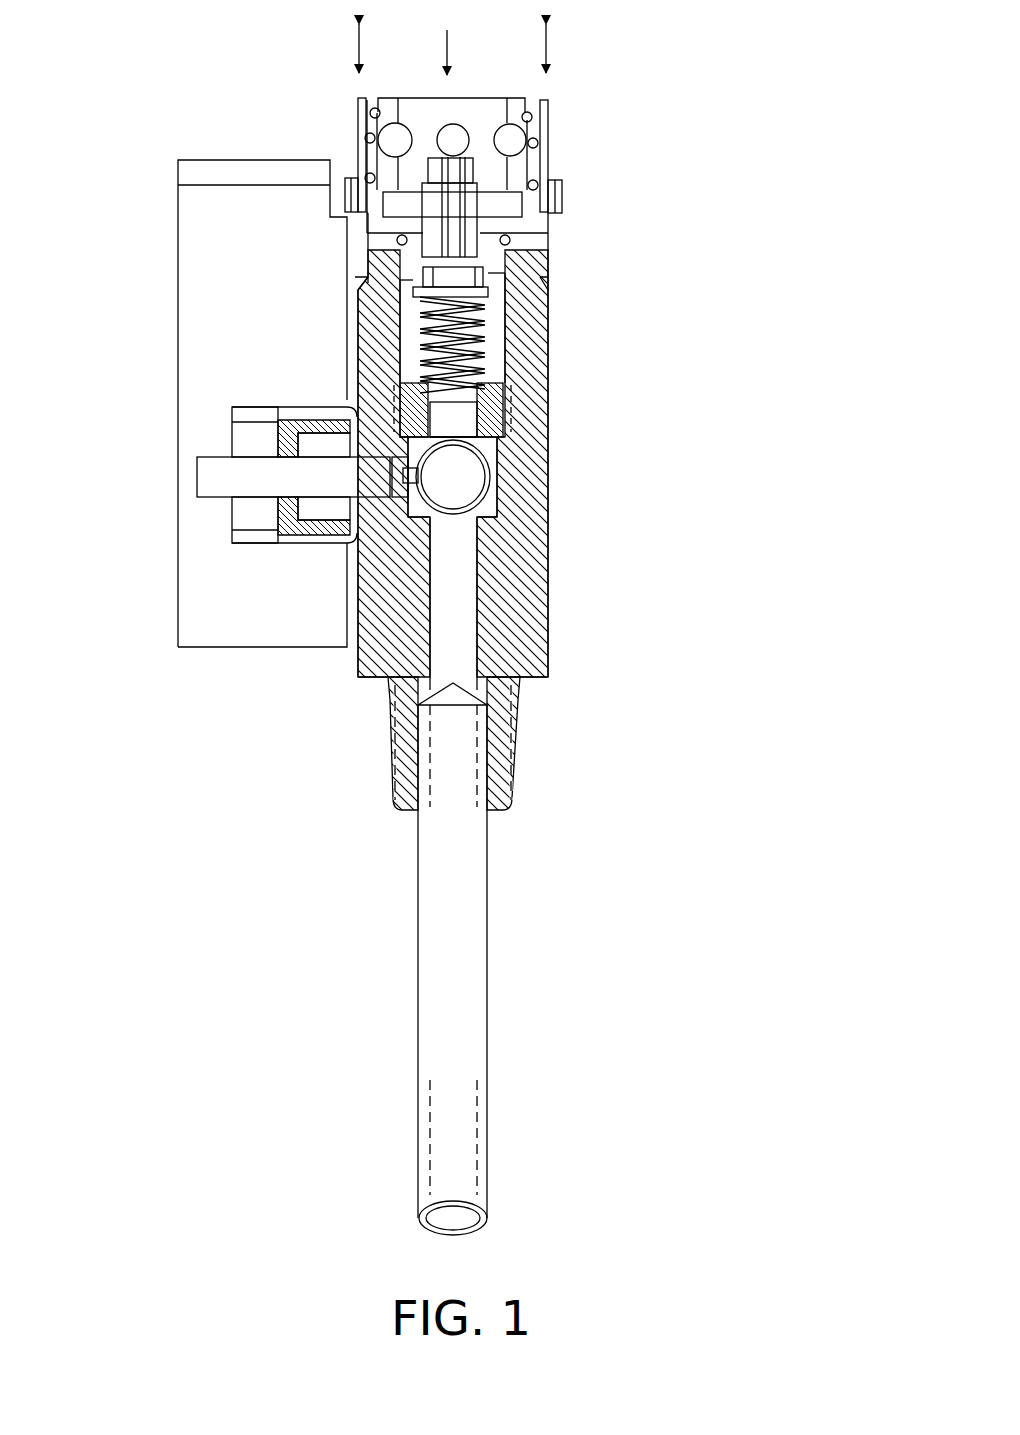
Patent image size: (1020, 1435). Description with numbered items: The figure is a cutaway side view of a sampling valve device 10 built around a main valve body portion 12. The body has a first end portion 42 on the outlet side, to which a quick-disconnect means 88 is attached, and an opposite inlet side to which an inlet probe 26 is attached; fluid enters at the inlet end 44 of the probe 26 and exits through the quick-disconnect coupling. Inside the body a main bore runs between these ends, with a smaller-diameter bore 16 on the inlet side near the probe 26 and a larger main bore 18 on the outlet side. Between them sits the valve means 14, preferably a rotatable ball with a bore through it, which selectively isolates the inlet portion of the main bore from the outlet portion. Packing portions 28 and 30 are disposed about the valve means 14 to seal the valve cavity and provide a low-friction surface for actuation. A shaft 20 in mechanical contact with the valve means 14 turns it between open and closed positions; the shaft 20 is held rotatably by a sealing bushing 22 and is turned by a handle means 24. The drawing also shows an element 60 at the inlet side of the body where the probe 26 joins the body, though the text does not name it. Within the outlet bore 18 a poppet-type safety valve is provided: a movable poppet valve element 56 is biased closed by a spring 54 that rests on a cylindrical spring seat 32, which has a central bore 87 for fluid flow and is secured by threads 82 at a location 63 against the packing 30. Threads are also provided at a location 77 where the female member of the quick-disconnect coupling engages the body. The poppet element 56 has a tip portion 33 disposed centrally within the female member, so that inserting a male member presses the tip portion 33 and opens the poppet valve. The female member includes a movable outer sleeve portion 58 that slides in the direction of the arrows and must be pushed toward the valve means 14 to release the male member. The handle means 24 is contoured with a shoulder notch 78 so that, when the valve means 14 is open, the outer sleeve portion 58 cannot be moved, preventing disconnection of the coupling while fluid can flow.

The sampling valve device 10 is at (716, 222).
The main valve body portion 12 is at (548, 648).
The valve means 14 is at (462, 480).
The bore 16 is at (453, 602).
The main bore 18 is at (497, 333).
The shaft 20 is at (213, 478).
The sealing bushing 22 is at (291, 452).
The handle means 24 is at (178, 268).
The inlet probe 26 is at (467, 1035).
The packing portion 28 is at (490, 508).
The packing portion 30 is at (490, 450).
The spring seat 32 is at (488, 412).
The tip portion 33 is at (478, 173).
The first end portion 42 is at (543, 235).
The inlet end 44 is at (453, 1225).
The spring 54 is at (487, 318).
The movable poppet valve element 56 is at (472, 227).
The outer sleeve portion 58 is at (348, 178).
The nut 60 is at (520, 758).
The location 63 is at (559, 422).
The location 77 is at (497, 275).
The shoulder notch 78 is at (327, 208).
The threads 82 is at (559, 393).
The bore 87 is at (457, 422).
The quick-disconnect means 88 is at (452, 37).